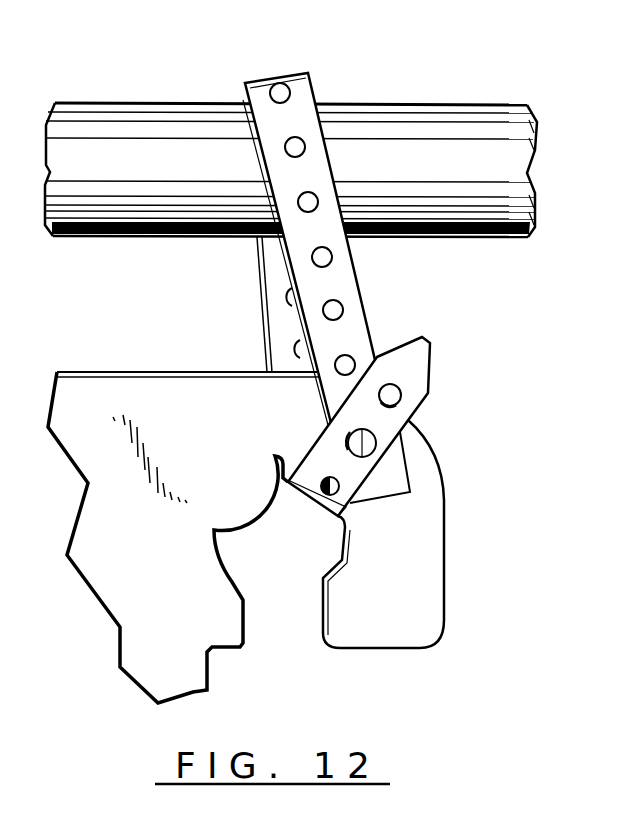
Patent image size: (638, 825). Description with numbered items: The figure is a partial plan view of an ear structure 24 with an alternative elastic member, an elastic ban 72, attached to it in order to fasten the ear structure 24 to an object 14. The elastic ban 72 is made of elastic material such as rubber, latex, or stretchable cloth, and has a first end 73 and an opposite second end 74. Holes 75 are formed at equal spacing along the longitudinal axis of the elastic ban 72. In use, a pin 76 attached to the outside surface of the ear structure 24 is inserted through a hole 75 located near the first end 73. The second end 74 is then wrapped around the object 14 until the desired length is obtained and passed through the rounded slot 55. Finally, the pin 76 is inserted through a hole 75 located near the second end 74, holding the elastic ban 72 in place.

The object 14 is at (490, 98).
The ear structure 24 is at (426, 534).
The rounded slot 55 is at (289, 556).
The elastic ban 72 is at (338, 231).
The first end 73 is at (382, 504).
The second end 74 is at (387, 422).
The holes 75 is at (316, 210).
The pin 76 is at (377, 443).